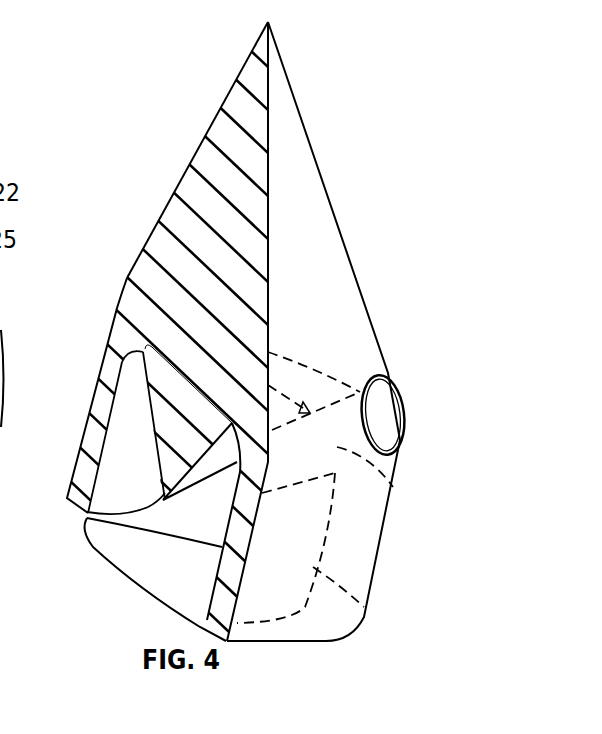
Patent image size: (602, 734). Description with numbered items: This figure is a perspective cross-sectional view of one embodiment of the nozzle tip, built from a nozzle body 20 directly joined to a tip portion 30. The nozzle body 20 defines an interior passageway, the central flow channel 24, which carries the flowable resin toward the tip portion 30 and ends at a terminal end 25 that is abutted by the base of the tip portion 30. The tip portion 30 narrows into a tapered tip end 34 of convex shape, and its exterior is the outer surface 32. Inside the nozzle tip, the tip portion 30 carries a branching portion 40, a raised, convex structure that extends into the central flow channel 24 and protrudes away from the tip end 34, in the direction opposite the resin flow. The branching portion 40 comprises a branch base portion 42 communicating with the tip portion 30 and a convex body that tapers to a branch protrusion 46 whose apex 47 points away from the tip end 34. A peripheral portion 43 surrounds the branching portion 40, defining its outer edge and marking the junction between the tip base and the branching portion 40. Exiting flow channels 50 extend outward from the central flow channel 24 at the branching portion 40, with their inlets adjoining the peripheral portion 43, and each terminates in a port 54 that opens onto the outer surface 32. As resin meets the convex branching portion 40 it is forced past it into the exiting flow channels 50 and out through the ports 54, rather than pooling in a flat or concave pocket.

The nozzle body 20 is at (380, 507).
The central flow channel 24 is at (141, 582).
The terminal end of the central flow channel 25 is at (118, 308).
The tip portion 30 is at (317, 182).
The outer surface of the tip portion 32 is at (203, 140).
The tip end 34 is at (268, 22).
The branching portion 40 is at (158, 407).
The branch base portion 42 is at (233, 421).
The peripheral portion 43 is at (143, 350).
The branch protrusion 46 is at (163, 492).
The apex of the branch protrusion 47 is at (85, 511).
The exiting flow channel 50 is at (398, 486).
The port 54 is at (378, 372).